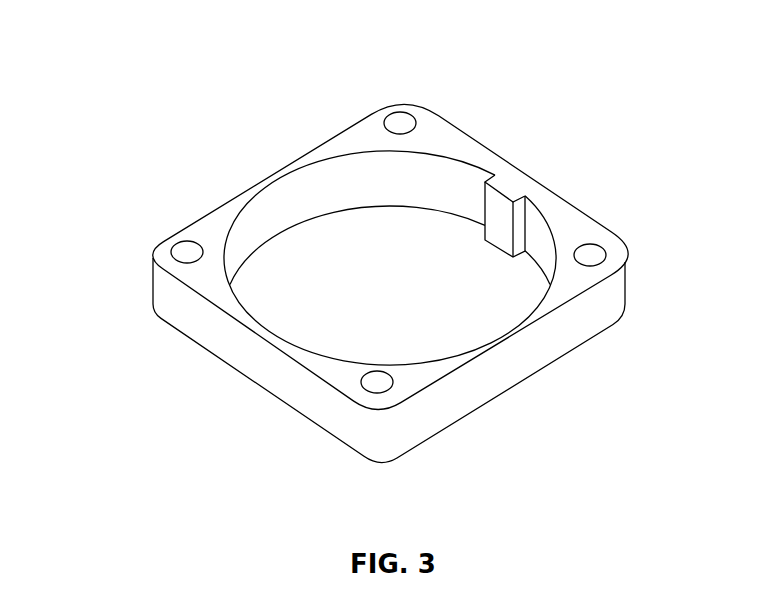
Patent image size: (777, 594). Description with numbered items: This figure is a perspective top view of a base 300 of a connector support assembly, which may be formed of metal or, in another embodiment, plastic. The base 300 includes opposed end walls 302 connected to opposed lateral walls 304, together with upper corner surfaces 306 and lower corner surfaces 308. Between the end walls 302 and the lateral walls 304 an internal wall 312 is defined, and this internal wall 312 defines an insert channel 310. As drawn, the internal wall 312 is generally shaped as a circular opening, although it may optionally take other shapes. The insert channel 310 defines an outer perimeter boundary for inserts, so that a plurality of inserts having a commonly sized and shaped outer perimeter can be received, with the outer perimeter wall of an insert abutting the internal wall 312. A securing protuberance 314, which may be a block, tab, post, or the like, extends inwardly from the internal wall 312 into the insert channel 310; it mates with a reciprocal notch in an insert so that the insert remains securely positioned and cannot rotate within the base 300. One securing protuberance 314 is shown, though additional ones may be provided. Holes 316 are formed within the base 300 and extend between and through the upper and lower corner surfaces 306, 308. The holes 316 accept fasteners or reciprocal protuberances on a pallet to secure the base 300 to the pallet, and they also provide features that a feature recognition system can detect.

The base 300 is at (132, 150).
The end walls 302 is at (490, 152).
The lateral walls 304 is at (262, 178).
The upper corner surfaces 306 is at (222, 213).
The lower corner surfaces 308 is at (387, 463).
The insert channel 310 is at (358, 230).
The internal wall 312 is at (280, 217).
The securing protuberance 314 is at (498, 238).
The holes 316 is at (180, 250).